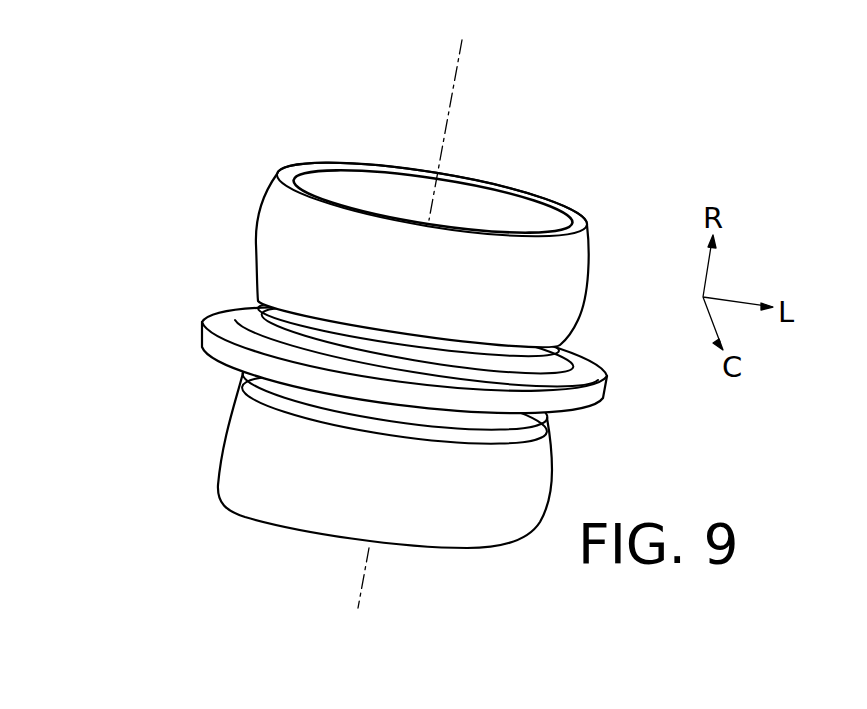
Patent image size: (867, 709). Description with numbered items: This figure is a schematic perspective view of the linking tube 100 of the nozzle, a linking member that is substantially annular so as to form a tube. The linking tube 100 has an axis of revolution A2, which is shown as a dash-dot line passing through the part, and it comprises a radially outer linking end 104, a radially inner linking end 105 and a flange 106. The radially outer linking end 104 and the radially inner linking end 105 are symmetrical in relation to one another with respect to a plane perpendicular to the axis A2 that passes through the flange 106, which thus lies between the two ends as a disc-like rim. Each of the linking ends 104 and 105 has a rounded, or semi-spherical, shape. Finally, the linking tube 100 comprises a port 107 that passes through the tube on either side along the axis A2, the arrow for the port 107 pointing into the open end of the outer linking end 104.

The linking tube 100 is at (373, 309).
The radially outer linking end 104 is at (563, 278).
The radially inner linking end 105 is at (235, 455).
The flange 106 is at (215, 342).
The port 107 is at (372, 203).
The axis of revolution A2 is at (452, 98).